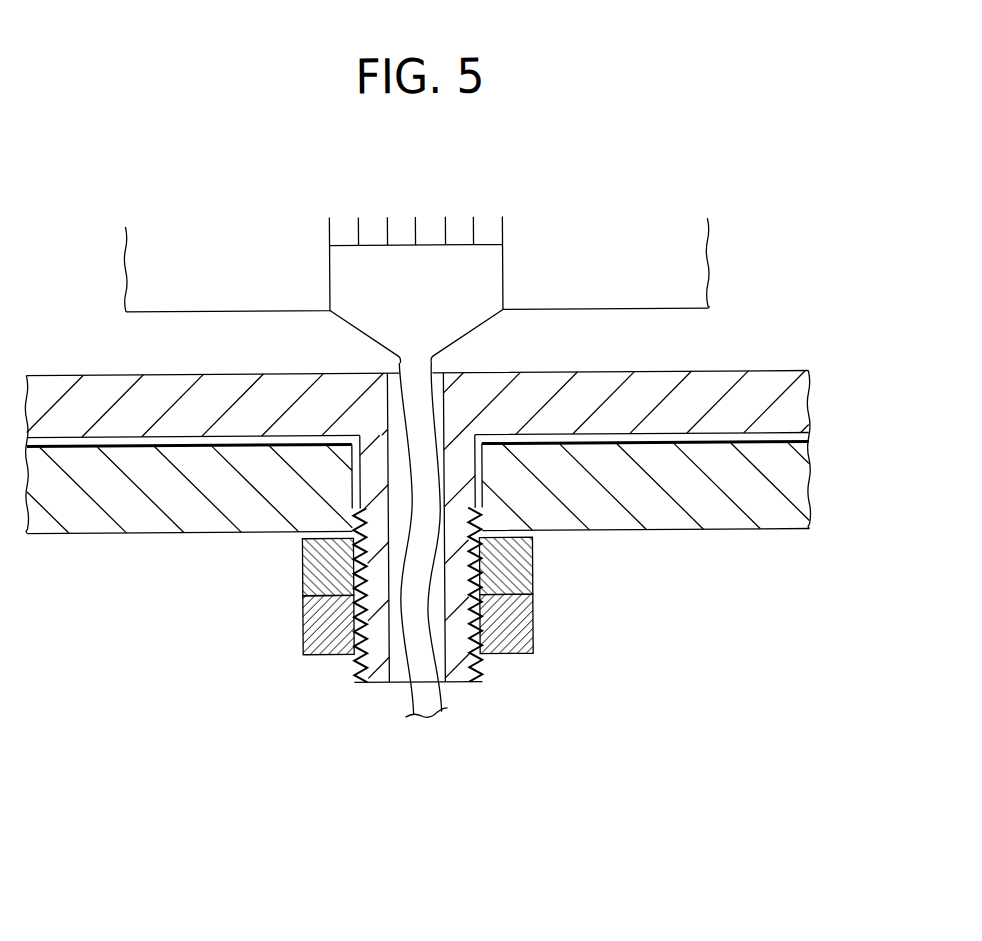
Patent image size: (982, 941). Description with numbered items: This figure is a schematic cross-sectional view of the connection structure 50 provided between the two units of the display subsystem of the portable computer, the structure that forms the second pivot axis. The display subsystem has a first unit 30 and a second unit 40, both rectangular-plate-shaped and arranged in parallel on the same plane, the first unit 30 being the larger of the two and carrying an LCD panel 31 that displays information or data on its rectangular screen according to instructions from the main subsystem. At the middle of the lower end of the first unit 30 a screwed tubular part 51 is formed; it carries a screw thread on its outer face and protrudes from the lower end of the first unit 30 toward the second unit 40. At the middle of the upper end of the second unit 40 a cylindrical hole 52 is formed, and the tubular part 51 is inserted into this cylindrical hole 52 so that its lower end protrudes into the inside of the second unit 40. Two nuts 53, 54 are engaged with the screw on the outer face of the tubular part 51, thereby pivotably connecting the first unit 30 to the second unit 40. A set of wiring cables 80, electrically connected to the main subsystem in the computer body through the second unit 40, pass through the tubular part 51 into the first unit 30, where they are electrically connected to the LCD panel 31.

The first unit 30 is at (800, 406).
The LCD panel 31 is at (690, 283).
The second unit 40 is at (800, 487).
The connection structure 50 is at (418, 587).
The screwed tubular part 51 is at (465, 688).
The cylindrical hole 52 is at (346, 488).
The nut 53 is at (532, 570).
The nut 54 is at (541, 628).
The set of wiring cables 80 is at (410, 692).